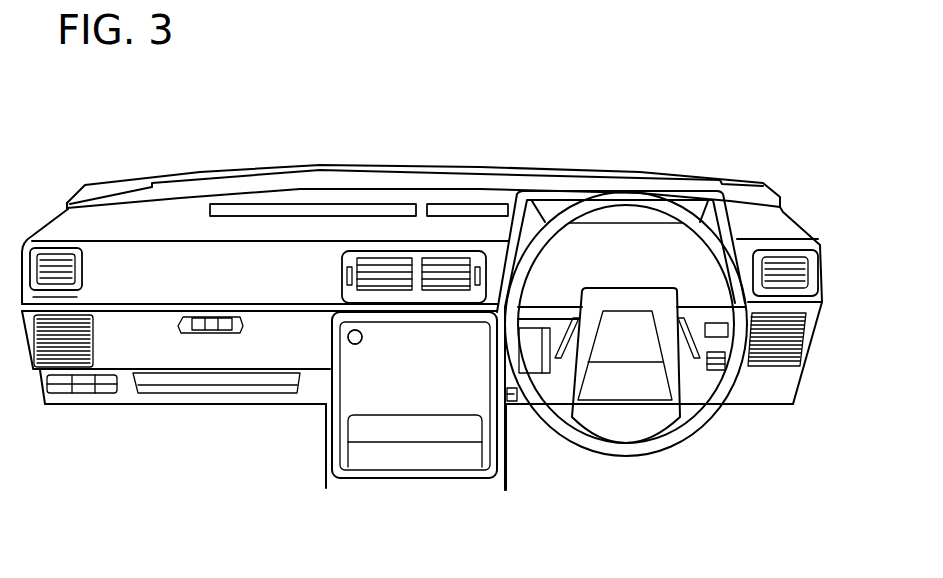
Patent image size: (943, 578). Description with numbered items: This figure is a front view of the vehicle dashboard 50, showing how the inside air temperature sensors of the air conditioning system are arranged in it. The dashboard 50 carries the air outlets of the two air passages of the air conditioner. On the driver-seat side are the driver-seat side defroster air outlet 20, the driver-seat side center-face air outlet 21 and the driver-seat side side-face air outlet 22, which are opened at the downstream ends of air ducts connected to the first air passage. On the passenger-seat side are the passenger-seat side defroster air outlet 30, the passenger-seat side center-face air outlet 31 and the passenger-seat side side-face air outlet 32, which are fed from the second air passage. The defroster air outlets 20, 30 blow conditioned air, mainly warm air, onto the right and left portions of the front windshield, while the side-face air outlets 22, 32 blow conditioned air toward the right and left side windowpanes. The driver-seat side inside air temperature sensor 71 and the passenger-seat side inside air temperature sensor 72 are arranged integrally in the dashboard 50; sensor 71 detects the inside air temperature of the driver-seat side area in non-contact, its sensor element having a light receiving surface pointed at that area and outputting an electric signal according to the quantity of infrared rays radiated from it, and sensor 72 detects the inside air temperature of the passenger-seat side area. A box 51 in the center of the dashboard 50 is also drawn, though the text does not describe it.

The driver-seat side defroster air outlet 20 is at (489, 210).
The driver-seat side center-face air outlet 21 is at (445, 257).
The driver-seat side side-face air outlet 22 is at (803, 272).
The passenger-seat side defroster air outlet 30 is at (337, 213).
The passenger-seat side center-face air outlet 31 is at (388, 258).
The passenger-seat side side-face air outlet 32 is at (43, 268).
The dashboard 50 is at (263, 285).
The glove box 51 is at (428, 457).
The driver-seat side inside air temperature sensor 71 is at (348, 344).
The passenger-seat side inside air temperature sensor 72 is at (355, 337).